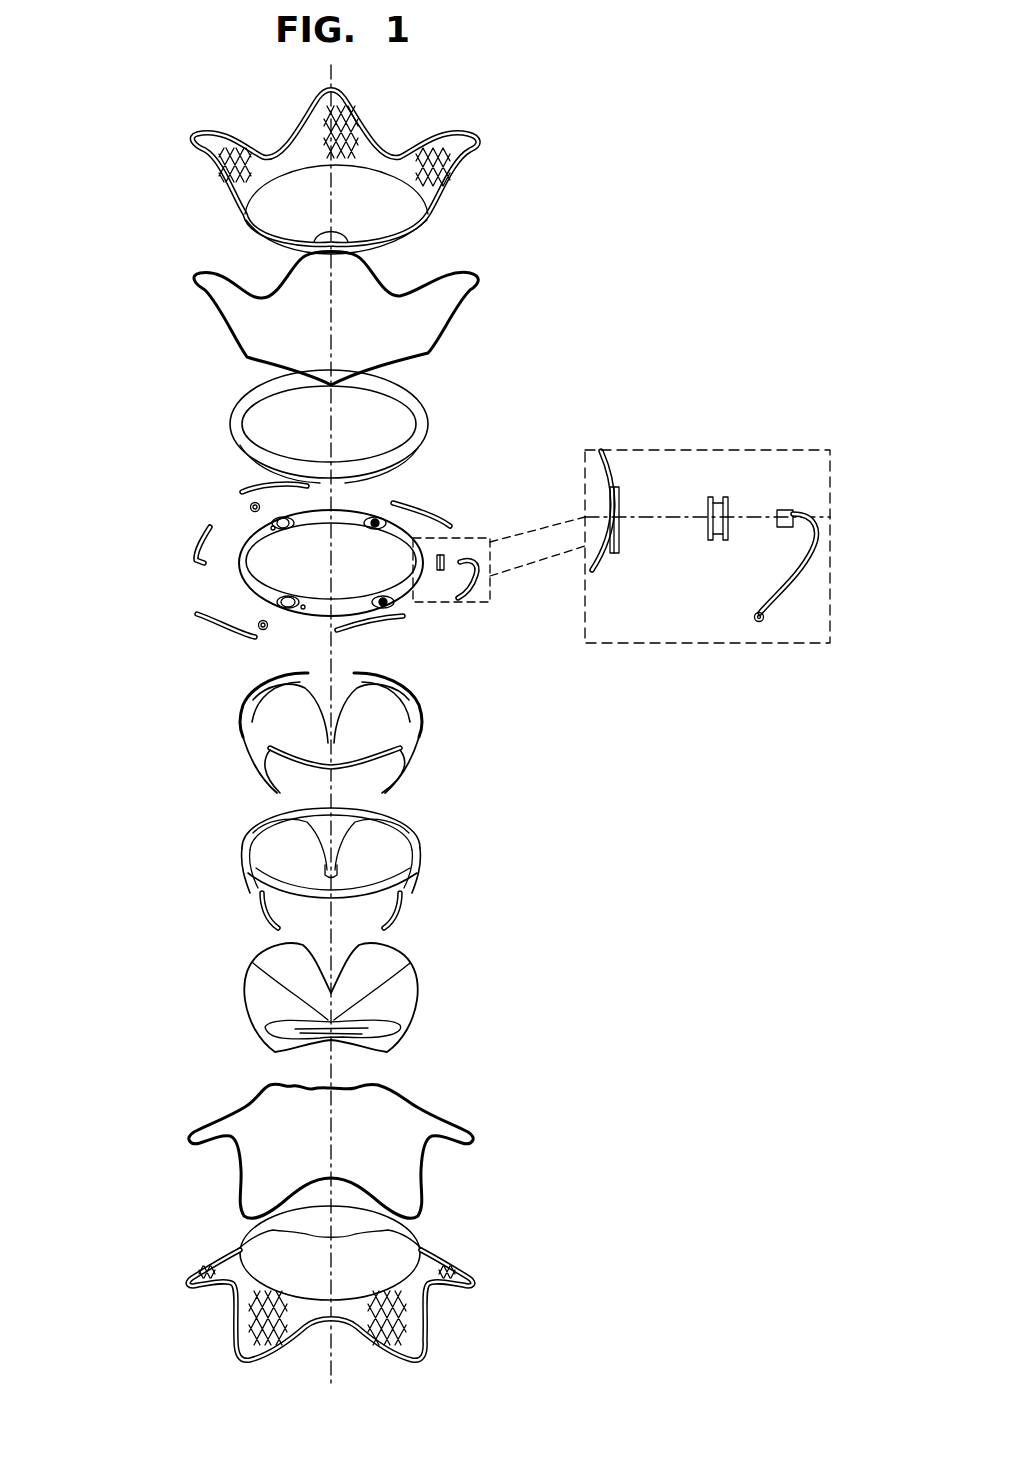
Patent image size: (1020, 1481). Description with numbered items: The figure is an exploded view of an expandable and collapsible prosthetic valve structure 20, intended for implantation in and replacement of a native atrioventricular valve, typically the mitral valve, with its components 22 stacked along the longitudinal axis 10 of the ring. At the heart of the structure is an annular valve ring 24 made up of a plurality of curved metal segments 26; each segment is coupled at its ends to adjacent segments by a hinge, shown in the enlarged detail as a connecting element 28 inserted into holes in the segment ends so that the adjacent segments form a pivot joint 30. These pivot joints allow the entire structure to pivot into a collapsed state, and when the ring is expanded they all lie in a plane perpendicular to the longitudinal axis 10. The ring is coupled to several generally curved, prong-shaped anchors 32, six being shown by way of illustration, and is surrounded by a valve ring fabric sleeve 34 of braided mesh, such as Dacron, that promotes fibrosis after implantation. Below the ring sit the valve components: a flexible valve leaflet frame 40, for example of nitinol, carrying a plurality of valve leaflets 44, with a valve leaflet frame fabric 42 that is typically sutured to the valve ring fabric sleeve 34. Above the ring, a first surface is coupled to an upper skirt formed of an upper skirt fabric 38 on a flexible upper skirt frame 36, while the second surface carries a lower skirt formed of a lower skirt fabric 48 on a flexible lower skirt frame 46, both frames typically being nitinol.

The longitudinal axis 10 is at (345, 70).
The prosthetic valve structure 20 is at (140, 95).
The components 22 is at (120, 127).
The annular valve ring 24 is at (236, 521).
The curved metal segments 26 is at (347, 607).
The connecting element 28 is at (715, 497).
The pivot joints 30 is at (627, 499).
The anchors 32 is at (393, 505).
The valve ring fabric sleeve 34 is at (420, 413).
The upper skirt frame 36 is at (455, 307).
The upper skirt fabric 38 is at (443, 182).
The valve leaflet frame 40 is at (417, 760).
The valve leaflet frame fabric 42 is at (413, 890).
The valve leaflets 44 is at (413, 997).
The lower skirt frame 46 is at (463, 1142).
The lower skirt fabric 48 is at (400, 1328).